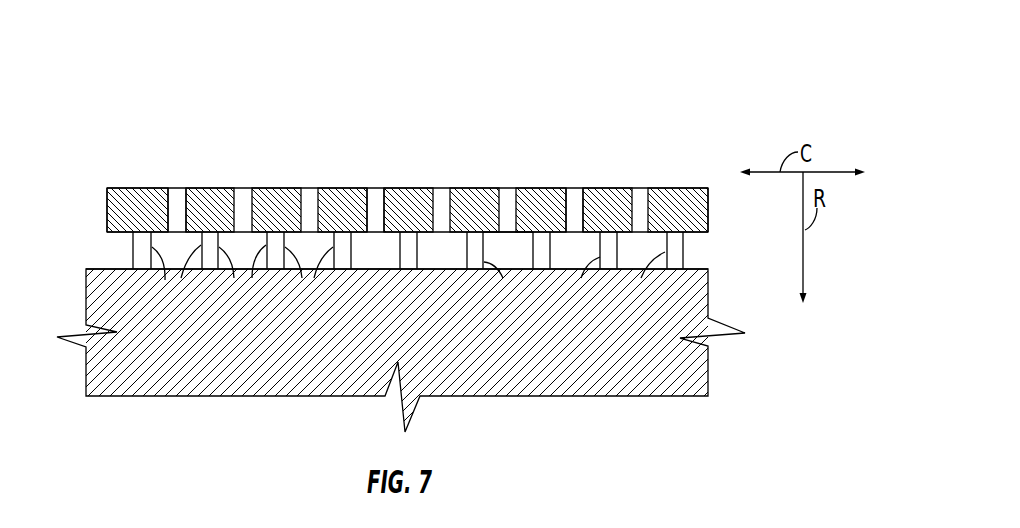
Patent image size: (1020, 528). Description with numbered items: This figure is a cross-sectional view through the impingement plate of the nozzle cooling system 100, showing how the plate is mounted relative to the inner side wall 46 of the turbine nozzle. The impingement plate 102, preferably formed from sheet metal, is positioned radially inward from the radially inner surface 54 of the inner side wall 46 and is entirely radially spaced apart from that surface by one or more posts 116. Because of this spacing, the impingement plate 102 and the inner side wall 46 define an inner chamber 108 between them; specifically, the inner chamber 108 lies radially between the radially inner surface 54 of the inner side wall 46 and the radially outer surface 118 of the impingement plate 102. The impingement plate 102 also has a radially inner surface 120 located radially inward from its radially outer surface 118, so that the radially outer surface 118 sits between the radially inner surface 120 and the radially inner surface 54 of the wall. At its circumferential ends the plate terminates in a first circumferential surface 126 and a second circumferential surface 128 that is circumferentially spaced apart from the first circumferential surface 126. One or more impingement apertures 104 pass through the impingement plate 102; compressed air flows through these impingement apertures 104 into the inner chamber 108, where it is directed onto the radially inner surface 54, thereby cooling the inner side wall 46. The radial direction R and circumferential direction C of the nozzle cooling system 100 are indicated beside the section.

The inner side wall 46 is at (647, 387).
The radially inner surface 54 is at (696, 269).
The nozzle cooling system 100 is at (129, 72).
The impingement plate 102 is at (340, 100).
The impingement apertures 104 is at (179, 184).
The inner chamber 108 is at (490, 240).
The posts 116 is at (165, 280).
The radially outer surface 118 is at (121, 233).
The radially inner surface 120 is at (141, 188).
The first circumferential surface 126 is at (107, 205).
The second circumferential surface 128 is at (709, 208).